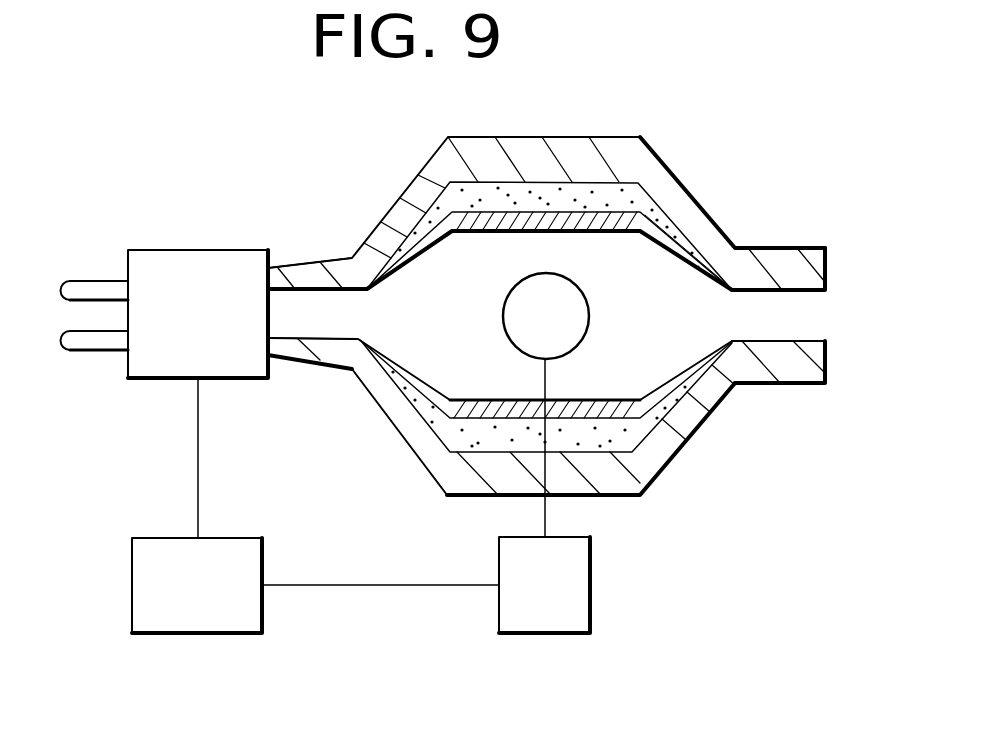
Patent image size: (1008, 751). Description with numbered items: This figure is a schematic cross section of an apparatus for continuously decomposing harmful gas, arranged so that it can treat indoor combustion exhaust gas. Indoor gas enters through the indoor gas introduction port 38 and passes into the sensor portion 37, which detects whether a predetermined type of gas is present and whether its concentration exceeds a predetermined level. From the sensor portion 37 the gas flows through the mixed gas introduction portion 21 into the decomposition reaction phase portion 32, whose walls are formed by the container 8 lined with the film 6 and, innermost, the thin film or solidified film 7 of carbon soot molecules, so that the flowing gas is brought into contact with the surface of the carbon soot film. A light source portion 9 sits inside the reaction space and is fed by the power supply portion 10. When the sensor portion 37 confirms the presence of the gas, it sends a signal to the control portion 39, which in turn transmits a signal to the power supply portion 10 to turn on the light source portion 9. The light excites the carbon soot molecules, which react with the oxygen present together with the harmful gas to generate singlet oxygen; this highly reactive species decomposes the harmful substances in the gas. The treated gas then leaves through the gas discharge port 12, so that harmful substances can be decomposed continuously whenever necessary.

The film 6 is at (638, 198).
The thin film or solidified film of carbon soot molecules 7 is at (672, 210).
The container 8 is at (633, 160).
The light source portion 9 is at (567, 313).
The power supply portion 10 is at (572, 571).
The gas discharge port 12 is at (808, 318).
The mixed gas introduction portion 21 is at (303, 316).
The decomposition reaction phase portion 32 is at (648, 263).
The sensor portion 37 is at (190, 273).
The indoor gas introduction port 38 is at (88, 313).
The control portion 39 is at (262, 600).